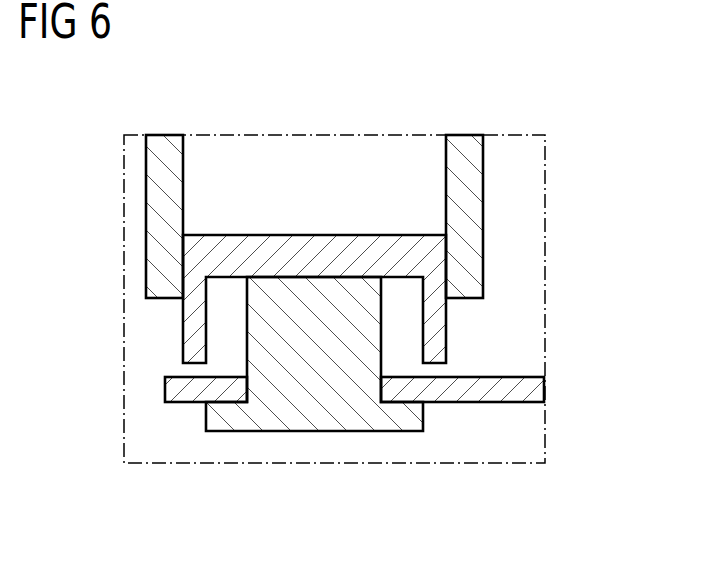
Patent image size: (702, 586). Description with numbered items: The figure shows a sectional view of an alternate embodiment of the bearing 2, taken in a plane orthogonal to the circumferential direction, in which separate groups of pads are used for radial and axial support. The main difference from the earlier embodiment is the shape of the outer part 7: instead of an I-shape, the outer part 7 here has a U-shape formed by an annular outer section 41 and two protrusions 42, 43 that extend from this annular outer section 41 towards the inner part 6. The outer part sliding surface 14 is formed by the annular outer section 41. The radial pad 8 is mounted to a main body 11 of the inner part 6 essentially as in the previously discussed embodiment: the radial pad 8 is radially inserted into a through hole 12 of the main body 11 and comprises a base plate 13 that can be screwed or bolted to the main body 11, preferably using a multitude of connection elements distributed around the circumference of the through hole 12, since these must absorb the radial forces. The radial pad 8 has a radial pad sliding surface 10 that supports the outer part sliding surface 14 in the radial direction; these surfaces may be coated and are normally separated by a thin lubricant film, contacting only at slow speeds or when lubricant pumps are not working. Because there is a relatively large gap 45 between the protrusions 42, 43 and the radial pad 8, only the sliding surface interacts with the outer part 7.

The bearing 2 is at (145, 405).
The inner part 6 is at (518, 367).
The outer part 7 is at (375, 184).
The radial pad 8 is at (345, 396).
The radial pad sliding surface 10 is at (282, 275).
The main body 11 is at (492, 391).
The through hole 12 is at (246, 386).
The base plate 13 is at (398, 421).
The outer part sliding surface 14 is at (307, 280).
The annular outer section 41 is at (328, 253).
The protrusion 42 is at (193, 343).
The protrusion 43 is at (440, 327).
The gap 45 is at (222, 323).